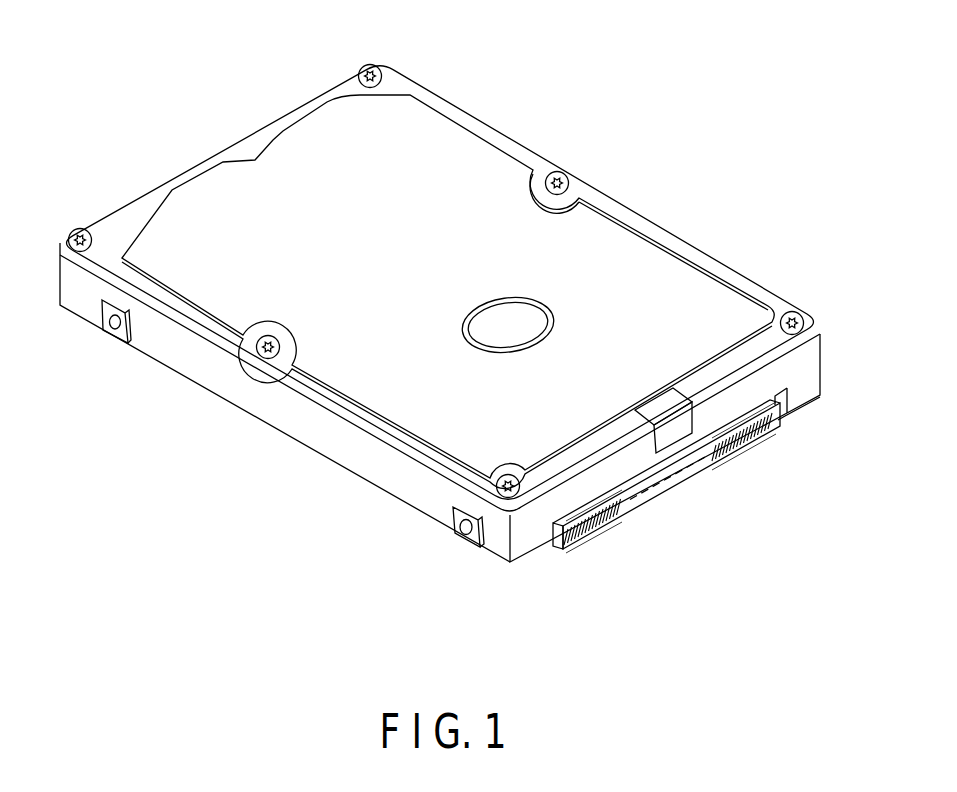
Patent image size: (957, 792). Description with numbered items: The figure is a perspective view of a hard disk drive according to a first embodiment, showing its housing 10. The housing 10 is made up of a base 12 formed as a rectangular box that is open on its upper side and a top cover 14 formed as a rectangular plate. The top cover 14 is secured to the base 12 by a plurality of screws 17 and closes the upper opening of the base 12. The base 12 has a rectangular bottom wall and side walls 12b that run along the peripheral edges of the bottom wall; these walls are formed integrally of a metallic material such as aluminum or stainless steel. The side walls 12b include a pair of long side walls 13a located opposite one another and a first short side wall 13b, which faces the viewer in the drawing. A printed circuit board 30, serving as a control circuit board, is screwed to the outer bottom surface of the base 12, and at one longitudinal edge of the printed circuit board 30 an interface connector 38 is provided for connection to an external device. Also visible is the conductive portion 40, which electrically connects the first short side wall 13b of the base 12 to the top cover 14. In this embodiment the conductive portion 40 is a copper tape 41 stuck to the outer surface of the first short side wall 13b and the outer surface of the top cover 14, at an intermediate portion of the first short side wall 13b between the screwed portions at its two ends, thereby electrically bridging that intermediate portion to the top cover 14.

The housing 10 is at (219, 88).
The base 12 is at (285, 405).
The side walls 12b is at (408, 483).
The long side walls 13a is at (343, 448).
The first short side wall 13b is at (792, 372).
The top cover 14 is at (624, 248).
The screws 17 is at (371, 66).
The printed circuit board 30 is at (792, 418).
The interface connector 38 is at (596, 527).
The conductive portion 40 is at (662, 405).
The copper tape 41 is at (672, 432).